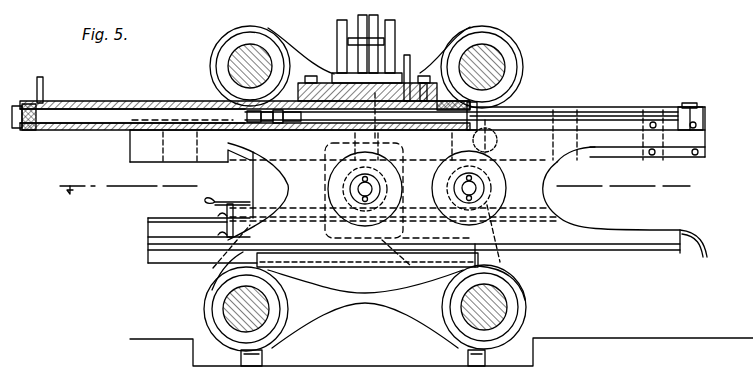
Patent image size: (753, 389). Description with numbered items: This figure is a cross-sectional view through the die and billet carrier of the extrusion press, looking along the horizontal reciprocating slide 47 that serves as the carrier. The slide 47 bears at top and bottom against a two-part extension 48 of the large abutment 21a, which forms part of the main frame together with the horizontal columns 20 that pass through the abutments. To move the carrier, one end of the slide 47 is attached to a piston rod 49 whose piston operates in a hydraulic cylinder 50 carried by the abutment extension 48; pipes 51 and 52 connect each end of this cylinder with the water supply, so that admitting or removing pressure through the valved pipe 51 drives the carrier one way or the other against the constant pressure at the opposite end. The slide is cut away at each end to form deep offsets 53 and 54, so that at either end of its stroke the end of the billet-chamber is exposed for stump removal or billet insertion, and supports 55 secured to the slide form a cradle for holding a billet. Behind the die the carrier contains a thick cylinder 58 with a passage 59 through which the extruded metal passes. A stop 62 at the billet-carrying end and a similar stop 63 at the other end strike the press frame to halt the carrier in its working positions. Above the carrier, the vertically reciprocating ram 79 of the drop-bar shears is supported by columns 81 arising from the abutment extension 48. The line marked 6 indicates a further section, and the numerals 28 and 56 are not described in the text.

The horizontal columns 20 is at (236, 62).
The wheel 28 is at (500, 300).
The abutment 21a is at (311, 56).
The horizontal reciprocating slide 47 is at (414, 216).
The two-part extension 48 is at (442, 82).
The piston rod 49 is at (560, 112).
The hydraulic cylinder 50 is at (165, 104).
The pipe 51 is at (44, 87).
The pipe 52 is at (409, 60).
The offset 53 is at (625, 202).
The offset 54 is at (258, 191).
The supports 55 is at (213, 200).
The guide 56 is at (385, 190).
The thick cylinder 58 is at (393, 175).
The passage 59 is at (360, 187).
The stop 62 is at (197, 150).
The stop 63 is at (645, 150).
The vertically reciprocating ram 79 is at (360, 58).
The columns 81 is at (341, 26).
The section line 6- 6 is at (371, 197).